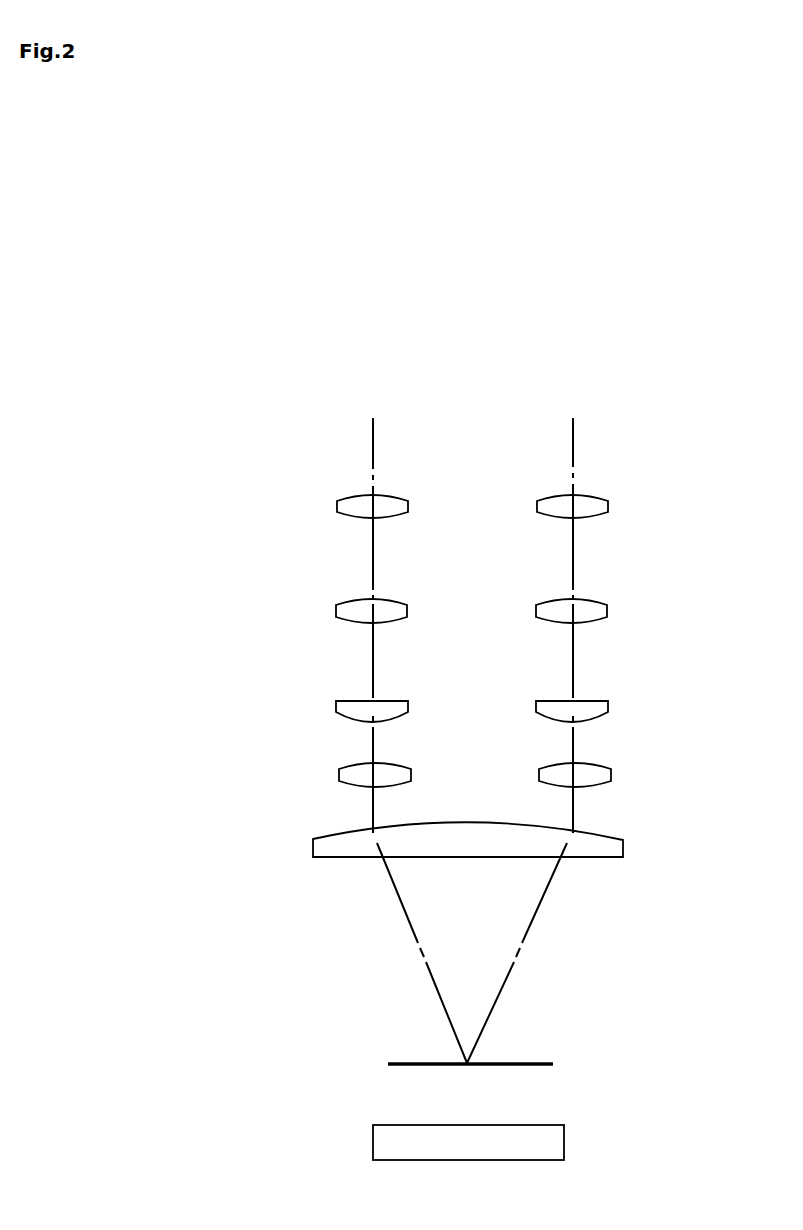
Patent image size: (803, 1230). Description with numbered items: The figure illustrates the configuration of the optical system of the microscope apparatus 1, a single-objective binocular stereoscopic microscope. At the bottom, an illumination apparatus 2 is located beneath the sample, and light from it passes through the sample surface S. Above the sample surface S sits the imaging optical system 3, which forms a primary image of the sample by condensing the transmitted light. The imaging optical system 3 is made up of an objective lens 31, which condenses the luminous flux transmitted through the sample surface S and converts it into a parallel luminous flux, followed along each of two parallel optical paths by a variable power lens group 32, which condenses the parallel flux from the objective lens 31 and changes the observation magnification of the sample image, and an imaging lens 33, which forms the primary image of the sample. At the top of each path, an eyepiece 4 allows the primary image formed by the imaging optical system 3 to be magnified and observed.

The microscope apparatus 1 is at (286, 412).
The illumination apparatus 2 is at (564, 1138).
The imaging optical system 3 is at (708, 585).
The eyepiece 4 is at (345, 497).
The objective lens 31 is at (623, 849).
The variable power lens group 32 is at (318, 693).
The imaging lens 33 is at (336, 608).
The sample surface S is at (547, 1063).